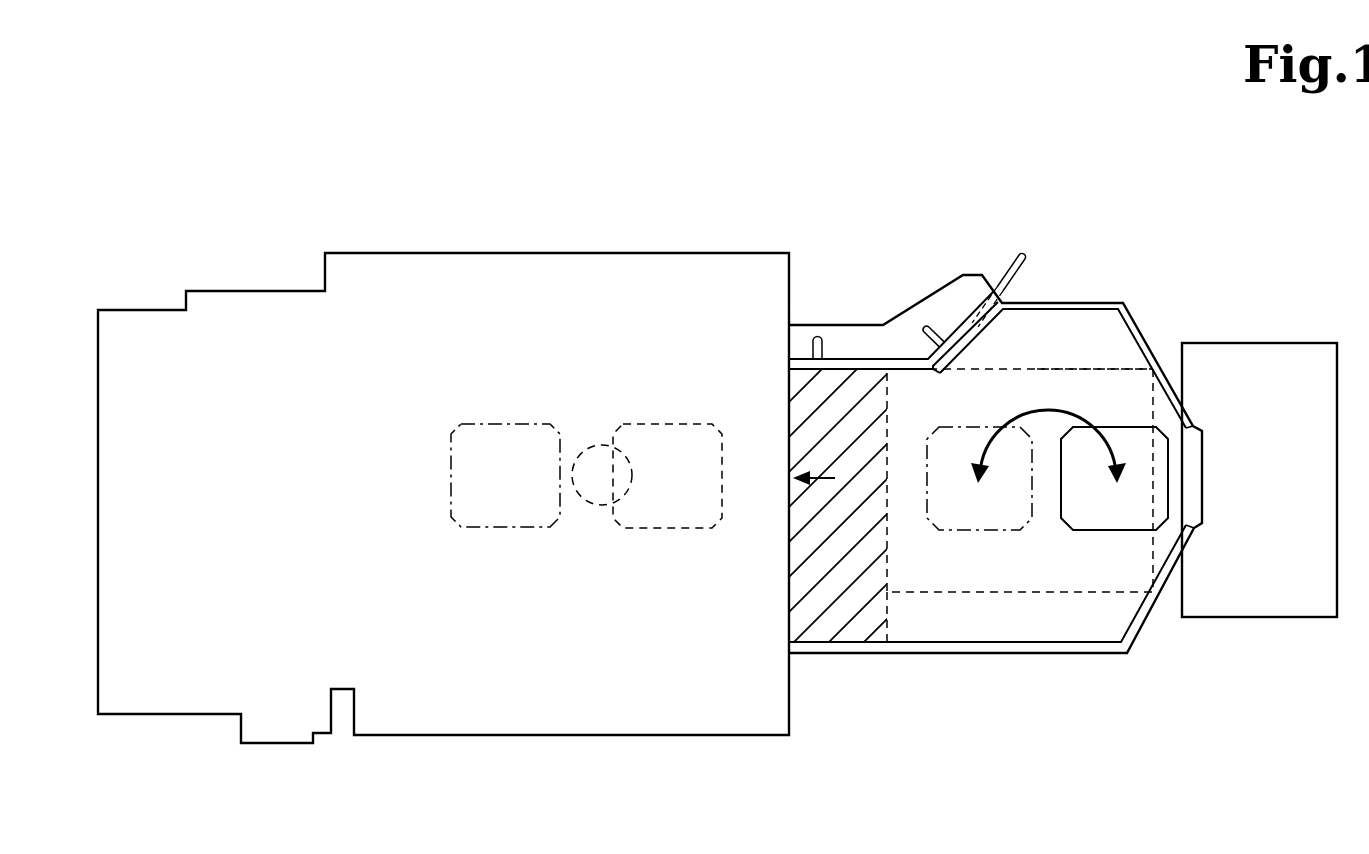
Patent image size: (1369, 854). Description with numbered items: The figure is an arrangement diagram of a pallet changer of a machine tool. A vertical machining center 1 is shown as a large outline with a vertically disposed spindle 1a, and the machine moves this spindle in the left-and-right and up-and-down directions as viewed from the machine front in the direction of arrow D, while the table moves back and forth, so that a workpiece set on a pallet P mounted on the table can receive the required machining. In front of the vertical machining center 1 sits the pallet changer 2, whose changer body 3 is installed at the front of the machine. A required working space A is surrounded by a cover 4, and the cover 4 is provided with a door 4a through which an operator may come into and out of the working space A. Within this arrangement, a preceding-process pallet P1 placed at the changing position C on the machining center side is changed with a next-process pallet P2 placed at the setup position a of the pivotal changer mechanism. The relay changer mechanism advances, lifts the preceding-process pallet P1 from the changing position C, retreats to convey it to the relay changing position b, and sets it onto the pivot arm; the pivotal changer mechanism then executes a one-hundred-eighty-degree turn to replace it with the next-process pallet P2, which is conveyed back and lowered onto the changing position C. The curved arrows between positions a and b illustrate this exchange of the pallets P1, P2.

The vertical machining center 1 is at (496, 230).
The spindle 1a is at (593, 504).
The pallet changer 2 is at (1113, 265).
The changer body 3 is at (1037, 369).
The cover 4 is at (1121, 303).
The door 4a is at (852, 359).
The working space A is at (833, 603).
The changing position C is at (668, 463).
The arrow indicating viewing direction D is at (822, 477).
The pallet P is at (493, 528).
The preceding-process pallet P1 is at (968, 530).
The next-process pallet P2 is at (1115, 532).
The setup position a is at (1123, 477).
The relay changing position b is at (978, 470).